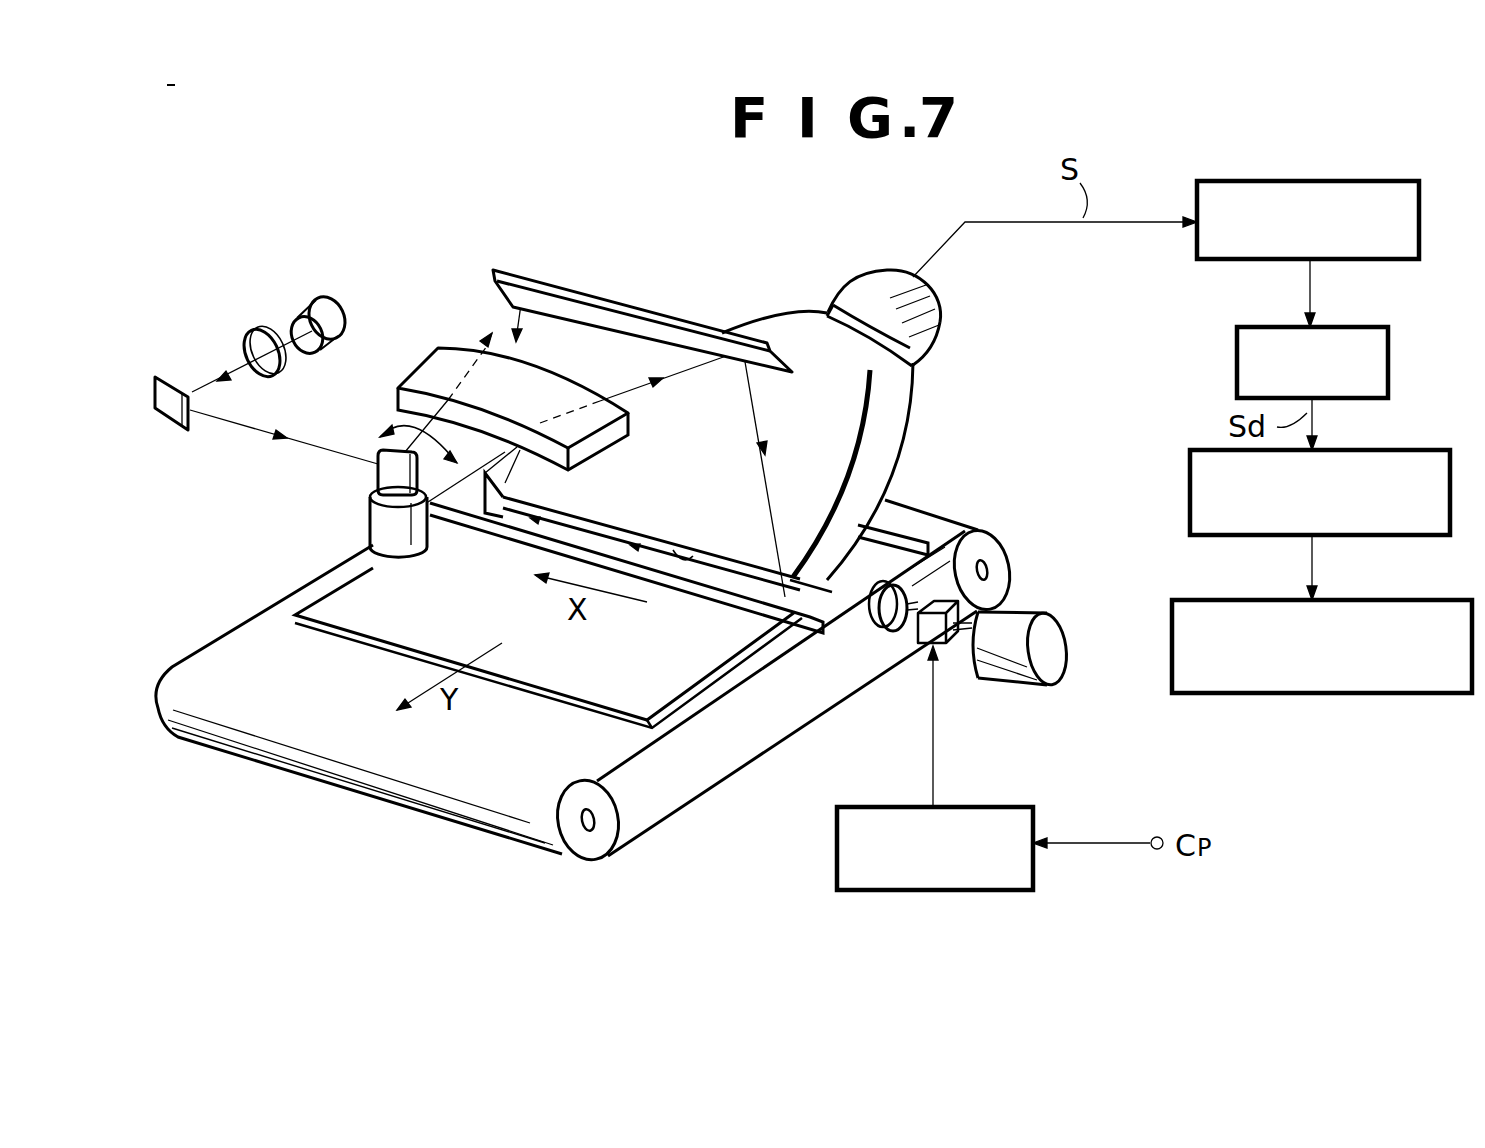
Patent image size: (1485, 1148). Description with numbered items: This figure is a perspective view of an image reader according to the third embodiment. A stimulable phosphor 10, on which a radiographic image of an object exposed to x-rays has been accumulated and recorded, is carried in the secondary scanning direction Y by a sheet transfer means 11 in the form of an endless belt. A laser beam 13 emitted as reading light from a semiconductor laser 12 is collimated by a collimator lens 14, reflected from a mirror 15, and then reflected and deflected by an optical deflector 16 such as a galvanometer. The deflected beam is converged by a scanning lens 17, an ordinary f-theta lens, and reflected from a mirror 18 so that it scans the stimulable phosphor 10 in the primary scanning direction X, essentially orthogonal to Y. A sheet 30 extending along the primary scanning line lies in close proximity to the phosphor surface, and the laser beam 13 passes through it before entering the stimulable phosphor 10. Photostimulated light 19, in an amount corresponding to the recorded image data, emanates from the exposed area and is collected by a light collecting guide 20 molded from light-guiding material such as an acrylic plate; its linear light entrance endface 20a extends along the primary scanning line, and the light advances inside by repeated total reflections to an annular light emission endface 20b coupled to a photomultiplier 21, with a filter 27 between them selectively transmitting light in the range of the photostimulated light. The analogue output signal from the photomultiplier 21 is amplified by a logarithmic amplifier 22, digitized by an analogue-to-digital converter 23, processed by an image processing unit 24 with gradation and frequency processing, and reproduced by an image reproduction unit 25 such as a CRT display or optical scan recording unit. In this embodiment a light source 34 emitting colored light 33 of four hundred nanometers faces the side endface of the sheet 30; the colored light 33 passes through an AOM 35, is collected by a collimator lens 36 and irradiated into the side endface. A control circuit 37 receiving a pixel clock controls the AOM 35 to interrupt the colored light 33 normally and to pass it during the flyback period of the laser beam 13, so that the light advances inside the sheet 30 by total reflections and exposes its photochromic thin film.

The stimulable phosphor 10 is at (353, 607).
The sheet transfer means 11 is at (217, 675).
The semiconductor laser 12 is at (327, 300).
The laser beam 13 is at (247, 432).
The collimator lens 14 is at (260, 325).
The mirror 15 is at (160, 372).
The optical deflector 16 is at (387, 475).
The scanning lens 17 is at (435, 352).
The mirror 18 is at (517, 273).
The photostimulated light 19 is at (737, 575).
The light collecting guide 20 is at (824, 394).
The light entrance endface 20a is at (673, 550).
The light emission endface 20b is at (848, 290).
The photomultiplier 21 is at (880, 280).
The logarithmic amplifier 22 is at (1357, 181).
The analogue-to-digital converter 23 is at (1272, 325).
The image processing unit 24 is at (1190, 490).
The image reproduction unit 25 is at (1172, 615).
The filter 27 is at (937, 292).
The sheet 30 is at (793, 618).
The colored light 33 is at (907, 623).
The light source 34 is at (1050, 667).
The AOM 35 is at (953, 647).
The collimator lens 36 is at (873, 627).
The control circuit 37 is at (837, 830).